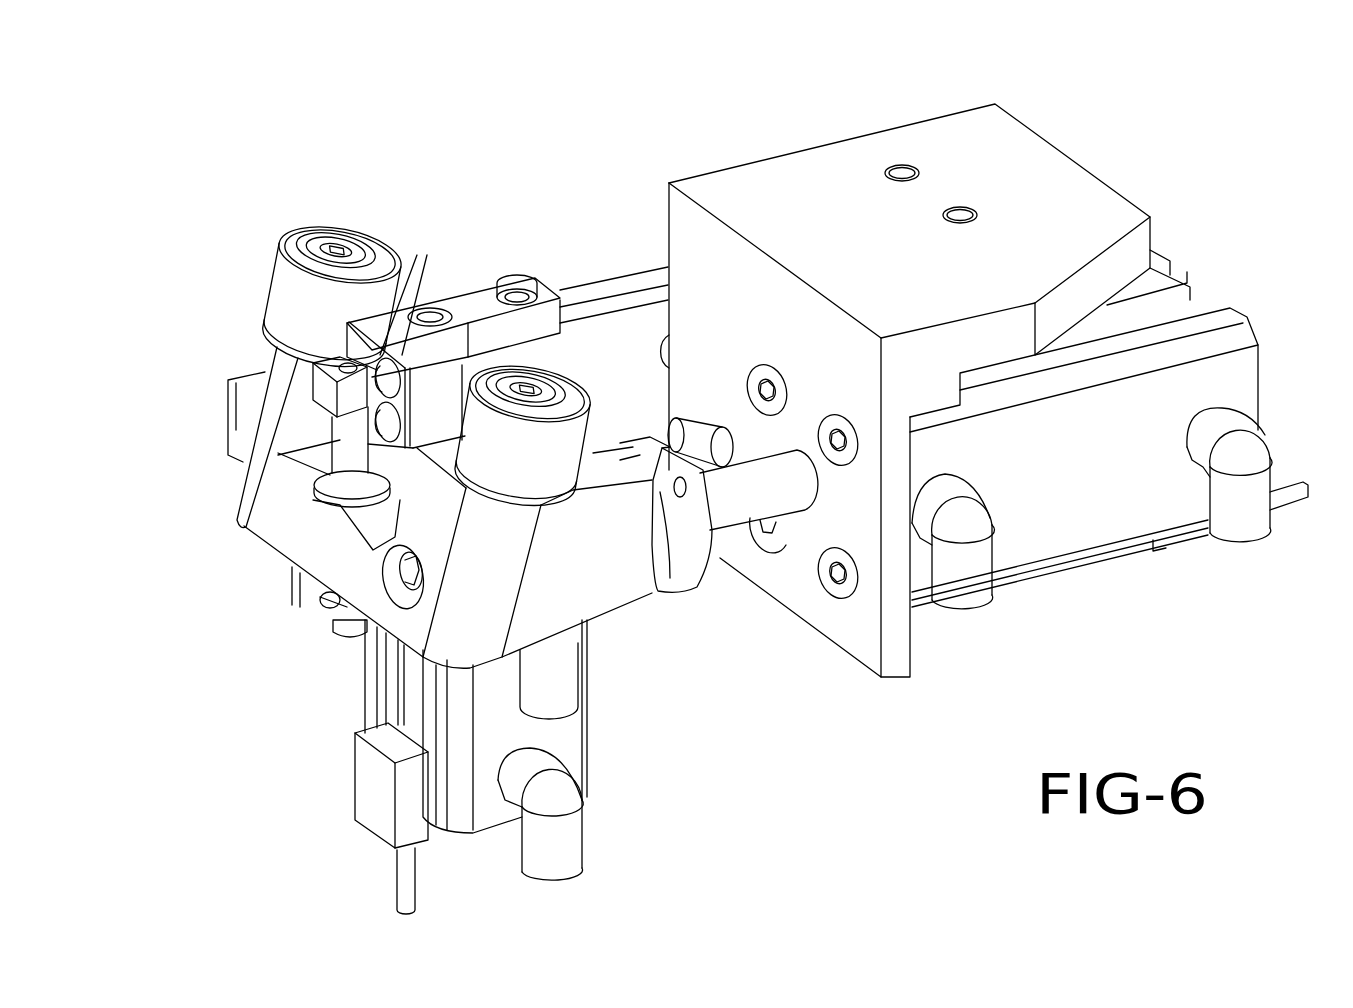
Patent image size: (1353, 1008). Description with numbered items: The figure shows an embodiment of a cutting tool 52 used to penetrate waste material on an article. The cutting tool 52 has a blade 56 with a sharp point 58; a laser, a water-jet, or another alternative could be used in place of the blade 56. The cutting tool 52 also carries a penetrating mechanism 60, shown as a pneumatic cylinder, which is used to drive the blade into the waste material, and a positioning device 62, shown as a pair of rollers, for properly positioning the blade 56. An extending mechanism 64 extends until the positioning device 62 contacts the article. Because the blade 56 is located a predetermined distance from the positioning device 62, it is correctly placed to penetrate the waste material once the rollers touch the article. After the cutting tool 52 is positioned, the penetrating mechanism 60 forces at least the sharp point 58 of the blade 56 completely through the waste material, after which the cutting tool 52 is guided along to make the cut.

The cutting tool 52 is at (634, 165).
The blade 56 is at (418, 311).
The sharp point 58 is at (400, 340).
The penetrating mechanism 60 is at (348, 453).
The positioning device 62 is at (282, 305).
The extending mechanism 64 is at (745, 500).